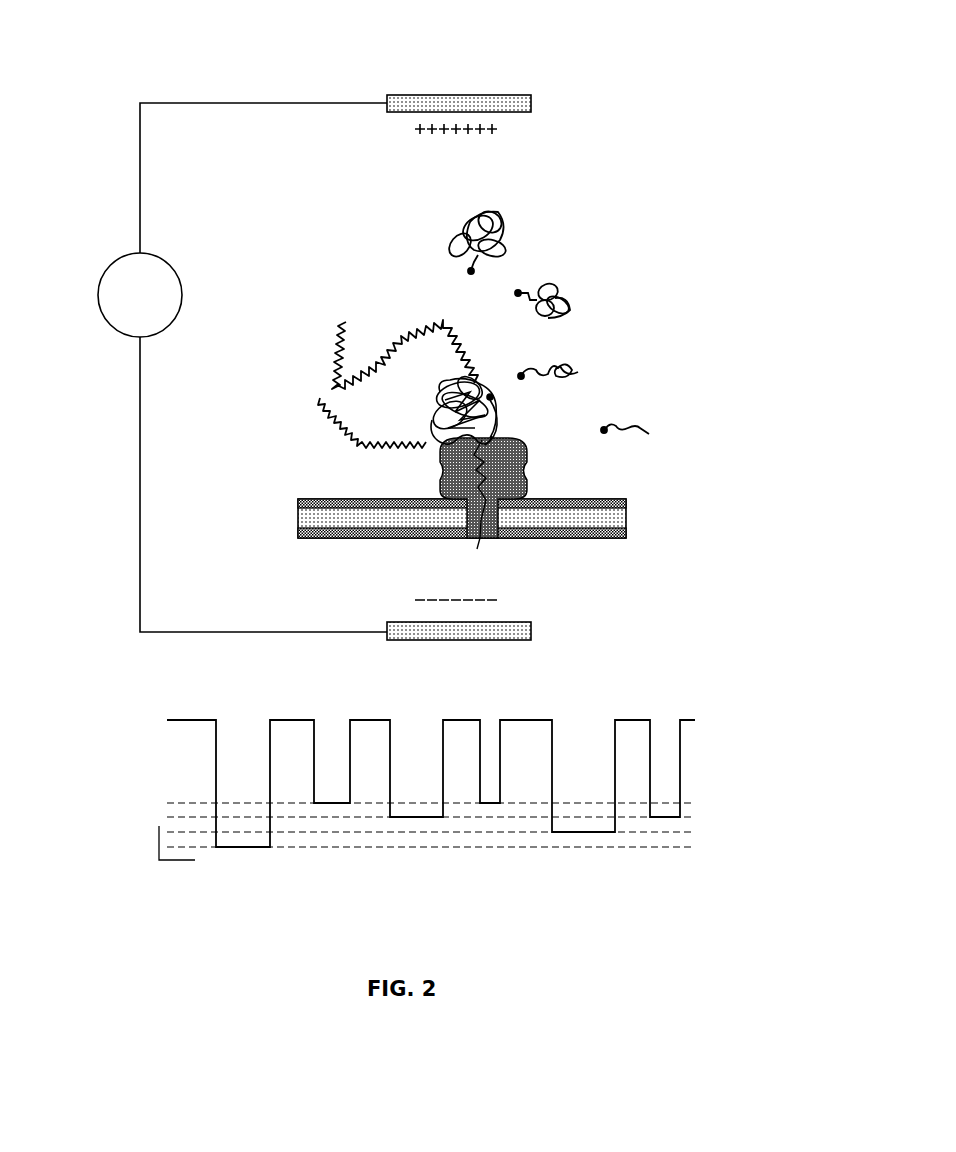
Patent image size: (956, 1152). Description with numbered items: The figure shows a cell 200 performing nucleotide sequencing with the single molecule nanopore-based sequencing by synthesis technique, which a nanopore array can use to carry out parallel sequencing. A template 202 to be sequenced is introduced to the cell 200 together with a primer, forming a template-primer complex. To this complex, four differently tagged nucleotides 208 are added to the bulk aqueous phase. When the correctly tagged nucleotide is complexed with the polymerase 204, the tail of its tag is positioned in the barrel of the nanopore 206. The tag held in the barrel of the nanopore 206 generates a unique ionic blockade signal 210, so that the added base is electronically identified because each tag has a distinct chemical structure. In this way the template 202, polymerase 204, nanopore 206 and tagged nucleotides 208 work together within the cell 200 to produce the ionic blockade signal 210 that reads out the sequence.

The cell 200 is at (190, 38).
The template 202 is at (330, 345).
The polymerase 204 is at (430, 415).
The nanopore 206 is at (440, 483).
The tagged nucleotides 208 is at (686, 222).
The ionic blockade signal 210 is at (728, 750).